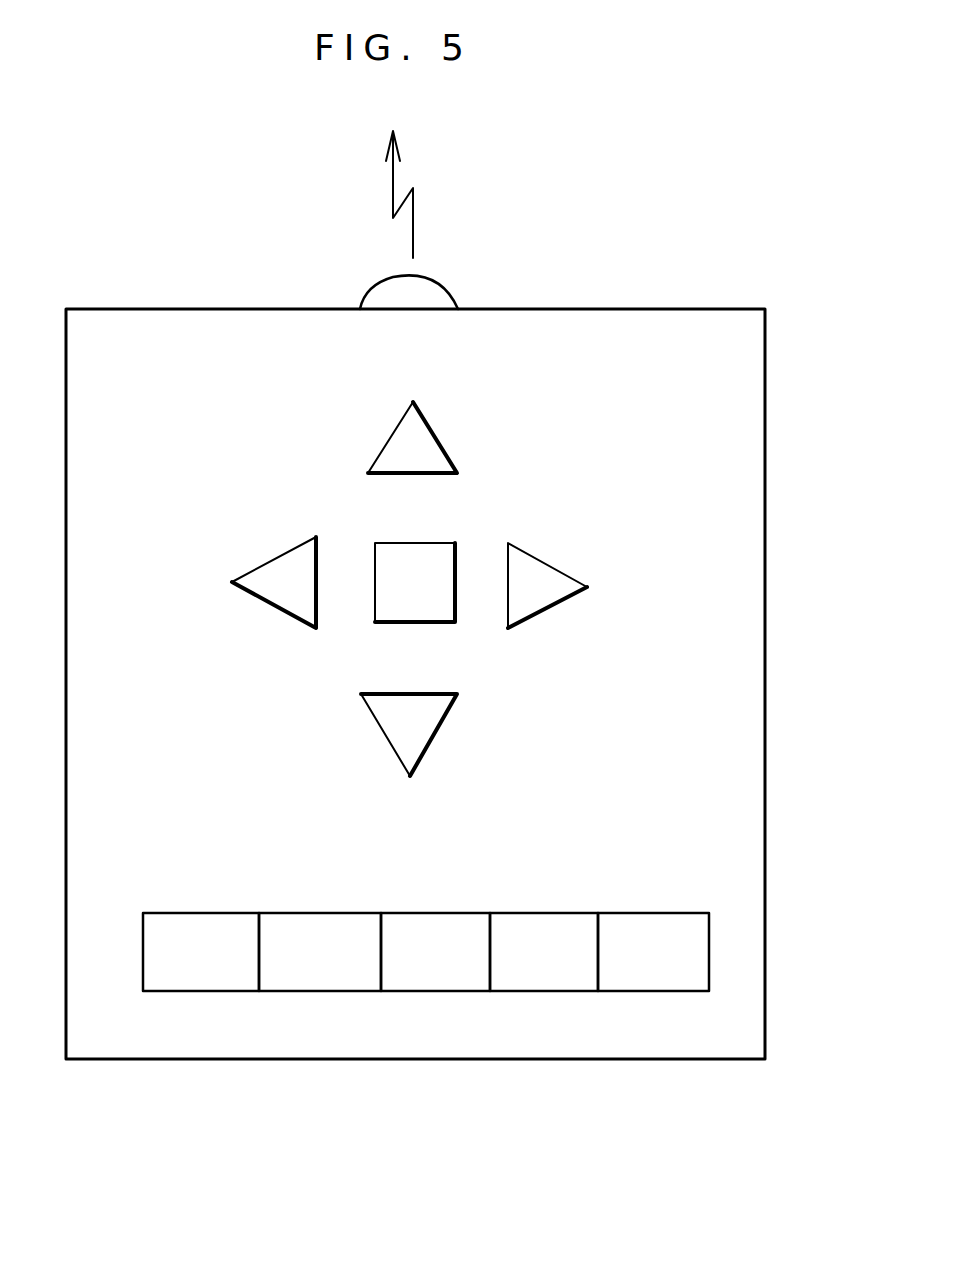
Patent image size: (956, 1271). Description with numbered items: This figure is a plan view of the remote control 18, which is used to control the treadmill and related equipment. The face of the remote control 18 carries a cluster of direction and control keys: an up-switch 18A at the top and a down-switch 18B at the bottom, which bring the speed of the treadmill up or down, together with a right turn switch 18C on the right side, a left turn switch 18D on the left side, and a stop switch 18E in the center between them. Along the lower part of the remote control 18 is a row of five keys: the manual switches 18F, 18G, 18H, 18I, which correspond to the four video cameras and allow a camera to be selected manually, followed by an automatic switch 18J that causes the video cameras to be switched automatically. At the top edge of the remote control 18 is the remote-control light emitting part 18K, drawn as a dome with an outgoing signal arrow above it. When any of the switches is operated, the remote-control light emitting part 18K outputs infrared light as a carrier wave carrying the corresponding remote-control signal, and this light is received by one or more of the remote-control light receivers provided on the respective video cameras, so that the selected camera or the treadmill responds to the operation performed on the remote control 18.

The remote control 18 is at (766, 300).
The up-switch 18A is at (432, 432).
The down-switch 18B is at (432, 718).
The right turn switch 18C is at (572, 578).
The left turn switch 18D is at (254, 572).
The stop switch 18E is at (458, 610).
The manual switch 18F is at (203, 993).
The manual switch 18G is at (350, 993).
The manual switch 18H is at (468, 993).
The manual switch 18I is at (543, 993).
The automatic switch 18J is at (650, 993).
The remote-control light emitting part 18K is at (440, 292).